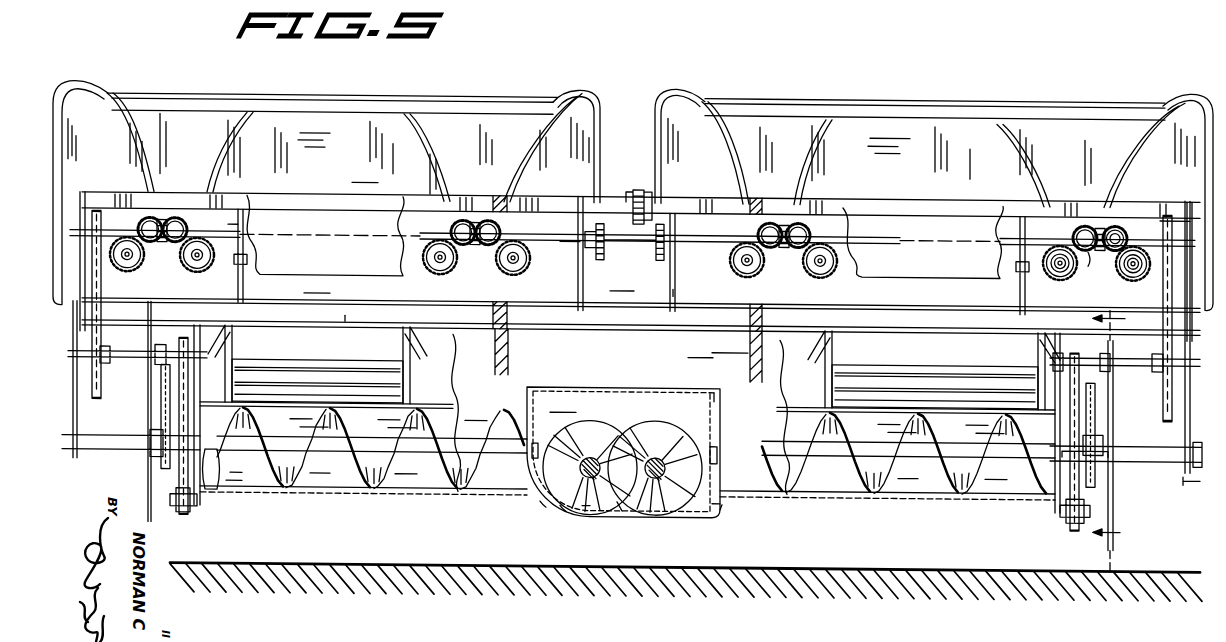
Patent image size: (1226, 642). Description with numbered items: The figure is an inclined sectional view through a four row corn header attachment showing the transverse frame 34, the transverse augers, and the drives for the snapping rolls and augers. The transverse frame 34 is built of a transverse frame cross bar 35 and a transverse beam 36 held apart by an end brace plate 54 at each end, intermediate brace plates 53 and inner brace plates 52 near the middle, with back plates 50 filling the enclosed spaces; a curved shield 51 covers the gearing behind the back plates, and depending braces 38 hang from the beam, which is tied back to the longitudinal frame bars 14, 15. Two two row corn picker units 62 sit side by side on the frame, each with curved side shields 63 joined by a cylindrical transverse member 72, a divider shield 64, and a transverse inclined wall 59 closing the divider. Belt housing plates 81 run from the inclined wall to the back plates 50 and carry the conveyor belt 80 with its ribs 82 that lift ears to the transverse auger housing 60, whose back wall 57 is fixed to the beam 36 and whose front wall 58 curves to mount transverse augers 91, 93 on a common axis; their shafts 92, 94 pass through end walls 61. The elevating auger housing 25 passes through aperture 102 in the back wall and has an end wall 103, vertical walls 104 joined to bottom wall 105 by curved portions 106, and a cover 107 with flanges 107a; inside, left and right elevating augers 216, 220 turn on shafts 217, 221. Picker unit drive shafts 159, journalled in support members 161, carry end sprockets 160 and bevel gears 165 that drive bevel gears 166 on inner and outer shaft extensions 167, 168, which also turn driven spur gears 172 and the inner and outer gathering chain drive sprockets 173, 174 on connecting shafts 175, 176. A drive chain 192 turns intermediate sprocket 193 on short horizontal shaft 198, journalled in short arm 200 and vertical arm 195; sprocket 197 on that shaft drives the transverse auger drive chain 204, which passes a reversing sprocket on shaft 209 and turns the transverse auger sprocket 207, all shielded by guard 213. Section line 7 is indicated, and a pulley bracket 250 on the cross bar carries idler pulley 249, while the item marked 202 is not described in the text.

The section line 7- 7 is at (1116, 438).
The upper longitudinal frame bar 14 is at (755, 190).
The lower longitudinal frame bar 15 is at (500, 297).
The elevating auger housing 25 is at (716, 500).
The transverse frame 34 is at (630, 327).
The transverse frame cross bar 35 is at (522, 198).
The transverse beam 36 is at (345, 312).
The depending brace 38 is at (510, 350).
The back plate 50 is at (440, 246).
The curved shield 51 is at (865, 270).
The inner brace plate 52 is at (673, 290).
The intermediate brace plate 53 is at (245, 278).
The end brace plate 54 is at (95, 272).
The back wall 57 is at (718, 350).
The front wall 58 is at (444, 412).
The transverse inclined wall 59 is at (365, 174).
The transverse auger housing 60 is at (828, 497).
The end wall 61 is at (198, 500).
The two row corn picker unit 62 is at (792, 95).
The curved side shield 63 is at (140, 152).
The divider shield 64 is at (437, 146).
The cylindrical transverse member 72 is at (203, 99).
The conveyor belt 80 is at (262, 372).
The belt housing plate 81 is at (233, 360).
The rib 82 is at (930, 362).
The transverse auger 91 is at (352, 492).
The transverse auger shaft 92 is at (310, 490).
The transverse auger 93 is at (962, 496).
The transverse auger shaft 94 is at (920, 496).
The auger housing aperture 102 is at (722, 498).
The end wall 103 is at (566, 404).
The vertical wall 104 is at (714, 415).
The bottom wall 105 is at (617, 502).
The curved portion 106 is at (565, 506).
The cover 107 is at (606, 386).
The vertical flange portion 107a is at (722, 388).
The picker unit drive shaft 159 is at (560, 228).
The end sprocket 160 is at (655, 248).
The support member 161 is at (82, 195).
The bevel gear 165 is at (163, 215).
The bevel gear 166 is at (1090, 247).
The inner shaft extension 167 is at (1094, 222).
The outer shaft extension 168 is at (1110, 216).
The driven spur gear 172 is at (1120, 222).
The inner gathering chain drive sprocket 173 is at (195, 268).
The outer gathering chain drive sprocket 174 is at (135, 270).
The connecting shaft 175 is at (440, 258).
The connecting shaft 176 is at (515, 258).
The drive chain 192 is at (1185, 355).
The intermediate sprocket 193 is at (1108, 392).
The vertical arm 195 is at (1183, 468).
The sprocket 197 is at (175, 326).
The short horizontal shaft 198 is at (1160, 362).
The short arm 200 is at (150, 352).
The drive chain 202 is at (162, 370).
The transverse auger drive chain 204 is at (1106, 422).
The transverse auger sprocket 207 is at (160, 425).
The shaft 209 is at (190, 515).
The guard 213 is at (146, 470).
The left hand elevating auger 216 is at (585, 510).
The shaft 217 is at (545, 500).
The right hand elevating auger 220 is at (702, 485).
The shaft 221 is at (686, 500).
The idler pulley 249 is at (640, 182).
The pulley bracket 250 is at (657, 190).